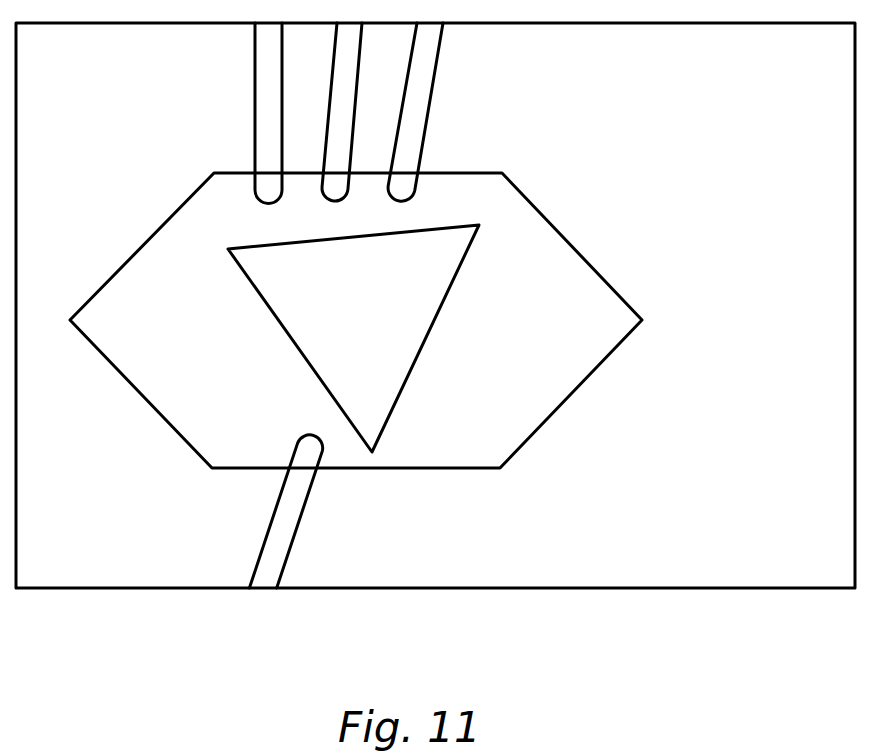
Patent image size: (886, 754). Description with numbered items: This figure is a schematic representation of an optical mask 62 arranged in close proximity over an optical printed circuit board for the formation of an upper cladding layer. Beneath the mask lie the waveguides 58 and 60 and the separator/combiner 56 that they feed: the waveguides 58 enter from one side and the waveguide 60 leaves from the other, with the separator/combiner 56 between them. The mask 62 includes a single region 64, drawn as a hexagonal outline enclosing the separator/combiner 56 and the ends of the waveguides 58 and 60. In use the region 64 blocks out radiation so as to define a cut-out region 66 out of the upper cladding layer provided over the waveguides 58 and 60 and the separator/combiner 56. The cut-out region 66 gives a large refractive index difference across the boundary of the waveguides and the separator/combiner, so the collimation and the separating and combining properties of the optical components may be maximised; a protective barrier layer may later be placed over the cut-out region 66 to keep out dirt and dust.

The separator/combiner 56 is at (430, 330).
The waveguides 58 is at (432, 110).
The waveguide 60 is at (275, 505).
The optical mask 62 is at (692, 514).
The single region 64 is at (602, 367).
The cut-out region 66 is at (492, 408).